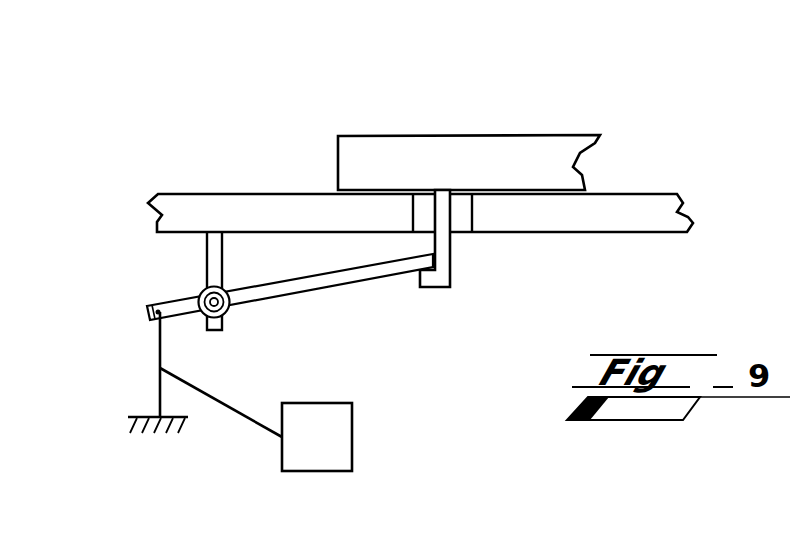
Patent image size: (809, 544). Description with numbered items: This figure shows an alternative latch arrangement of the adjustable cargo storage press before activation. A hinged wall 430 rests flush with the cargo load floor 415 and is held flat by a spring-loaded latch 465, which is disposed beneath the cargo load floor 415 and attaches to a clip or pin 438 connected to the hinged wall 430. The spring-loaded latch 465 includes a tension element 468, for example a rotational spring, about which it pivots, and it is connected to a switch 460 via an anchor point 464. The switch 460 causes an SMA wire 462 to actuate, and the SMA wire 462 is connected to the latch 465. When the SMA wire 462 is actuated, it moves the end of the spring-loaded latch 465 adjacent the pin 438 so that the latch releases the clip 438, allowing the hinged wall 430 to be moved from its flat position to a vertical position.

The cargo load floor 415 is at (258, 212).
The hinged wall 430 is at (448, 150).
The clip or pin 438 is at (455, 254).
The switch 460 is at (352, 423).
The SMA wire 462 is at (160, 333).
The anchor point 464 is at (150, 307).
The spring-loaded latch 465 is at (373, 280).
The tension element 468 is at (198, 292).